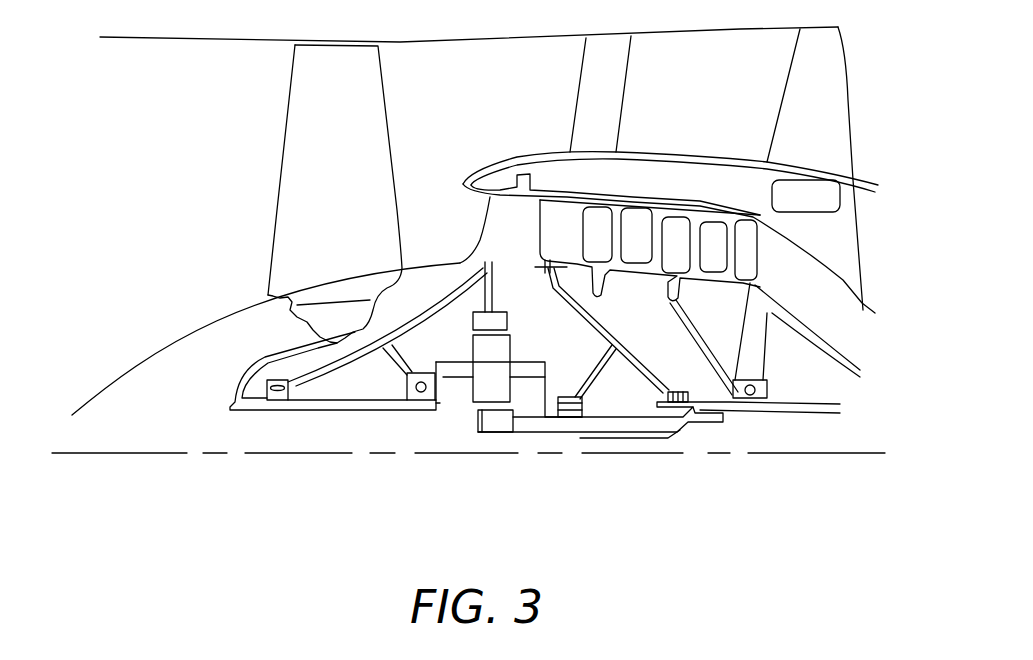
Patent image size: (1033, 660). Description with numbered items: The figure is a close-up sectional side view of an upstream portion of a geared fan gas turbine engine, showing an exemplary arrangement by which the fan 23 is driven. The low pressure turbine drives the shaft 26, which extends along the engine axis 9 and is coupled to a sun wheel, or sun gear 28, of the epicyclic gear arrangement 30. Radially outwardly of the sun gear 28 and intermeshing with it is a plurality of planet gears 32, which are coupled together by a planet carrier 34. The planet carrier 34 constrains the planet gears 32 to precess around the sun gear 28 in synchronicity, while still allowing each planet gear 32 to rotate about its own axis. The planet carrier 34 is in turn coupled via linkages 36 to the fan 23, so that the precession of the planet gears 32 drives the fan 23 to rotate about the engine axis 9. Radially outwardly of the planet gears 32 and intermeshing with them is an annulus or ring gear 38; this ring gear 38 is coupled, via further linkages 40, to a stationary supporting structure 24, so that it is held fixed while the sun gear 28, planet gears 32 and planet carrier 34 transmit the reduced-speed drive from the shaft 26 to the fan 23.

The engine axis 9 is at (165, 455).
The fan 23 is at (310, 171).
The stationary supporting structure 24 is at (486, 220).
The shaft 26 is at (620, 432).
The sun gear 28 is at (493, 423).
The epicyclic gear arrangement 30 is at (460, 403).
The planet gears 32 is at (472, 405).
The planet carrier 34 is at (533, 403).
The linkages 36 is at (450, 403).
The ring gear 38 is at (497, 322).
The linkages 40 is at (497, 292).